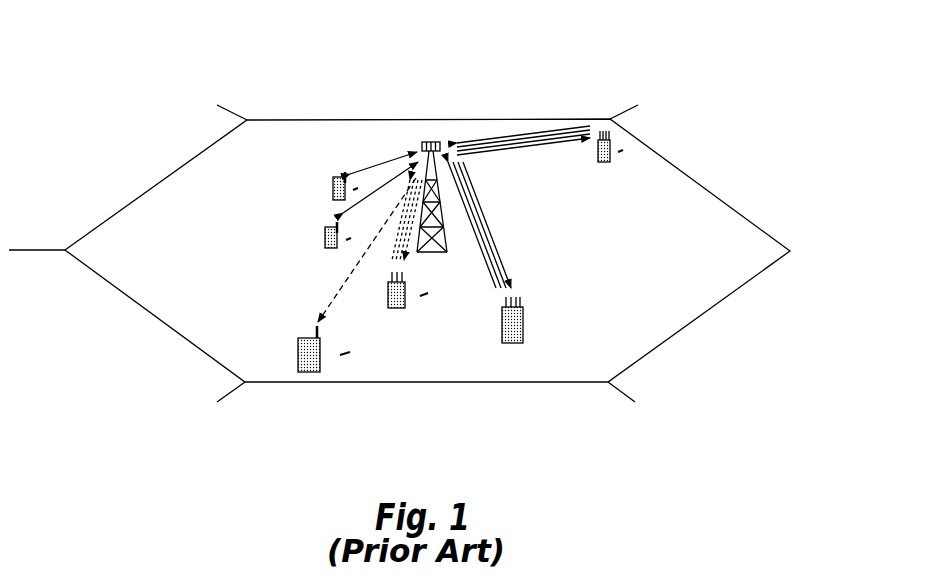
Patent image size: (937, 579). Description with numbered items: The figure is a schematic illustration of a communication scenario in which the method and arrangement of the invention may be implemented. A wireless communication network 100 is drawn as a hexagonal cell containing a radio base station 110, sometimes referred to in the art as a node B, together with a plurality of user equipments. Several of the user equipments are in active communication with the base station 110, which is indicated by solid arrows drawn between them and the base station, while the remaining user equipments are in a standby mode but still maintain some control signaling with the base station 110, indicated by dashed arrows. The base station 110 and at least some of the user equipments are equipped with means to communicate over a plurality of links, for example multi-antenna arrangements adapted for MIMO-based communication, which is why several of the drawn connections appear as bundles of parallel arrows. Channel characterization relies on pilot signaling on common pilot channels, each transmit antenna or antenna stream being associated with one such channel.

The wireless communication network 100 is at (188, 67).
The radio base station 110 is at (430, 140).